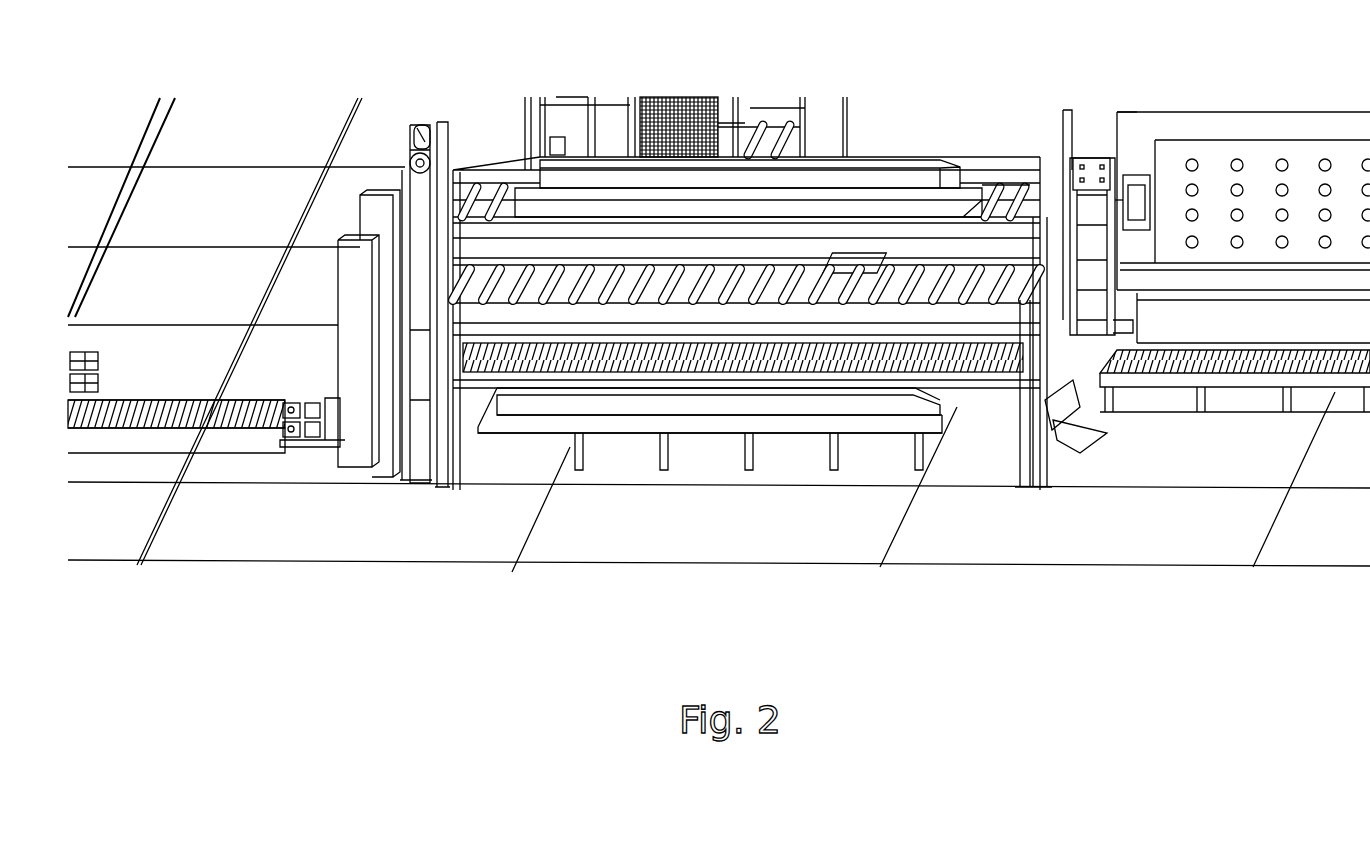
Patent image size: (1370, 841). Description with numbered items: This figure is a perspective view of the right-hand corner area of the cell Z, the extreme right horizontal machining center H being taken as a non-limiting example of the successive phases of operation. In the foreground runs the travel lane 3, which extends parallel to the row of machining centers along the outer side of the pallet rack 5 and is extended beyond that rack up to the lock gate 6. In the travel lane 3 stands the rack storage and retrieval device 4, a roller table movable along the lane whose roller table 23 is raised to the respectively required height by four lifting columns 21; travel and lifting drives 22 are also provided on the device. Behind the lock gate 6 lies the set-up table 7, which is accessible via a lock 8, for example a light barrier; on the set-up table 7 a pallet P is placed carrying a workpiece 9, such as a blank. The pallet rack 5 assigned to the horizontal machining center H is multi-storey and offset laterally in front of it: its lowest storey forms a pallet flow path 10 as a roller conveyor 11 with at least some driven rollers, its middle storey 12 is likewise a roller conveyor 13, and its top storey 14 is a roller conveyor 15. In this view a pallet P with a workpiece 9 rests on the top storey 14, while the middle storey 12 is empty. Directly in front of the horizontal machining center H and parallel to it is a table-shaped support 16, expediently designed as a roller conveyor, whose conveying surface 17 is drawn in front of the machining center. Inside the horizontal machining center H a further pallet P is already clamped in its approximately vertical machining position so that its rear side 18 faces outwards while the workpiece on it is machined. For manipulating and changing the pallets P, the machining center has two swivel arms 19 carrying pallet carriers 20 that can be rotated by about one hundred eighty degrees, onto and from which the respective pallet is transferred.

The cell Z is at (210, 86).
The travel lane 3 is at (133, 199).
The rack storage and retrieval device 4 is at (145, 445).
The pallet rack 5 is at (483, 166).
The lock gate 6 is at (428, 178).
The set-up table 7 is at (620, 423).
The lock 8 is at (1018, 427).
The workpiece 9 is at (932, 165).
The pallet flow path 10 is at (470, 423).
The roller conveyor 11 is at (997, 370).
The middle storey 12 is at (503, 285).
The roller conveyor 13 is at (965, 290).
The top storey 14 is at (505, 183).
The roller conveyor 15 is at (997, 190).
The table-shaped support 16 is at (1172, 385).
The discharge conveyor belt 17 is at (1158, 365).
The rear side 18 is at (1260, 175).
The swivel arm 19 is at (1092, 200).
The pallet carrier 20 is at (1133, 175).
The lifting column 21 is at (345, 278).
The travel and lifting drive 22 is at (100, 360).
The roller table 23 is at (100, 430).
The pallet P is at (970, 170).
The horizontal machining center H is at (1133, 125).